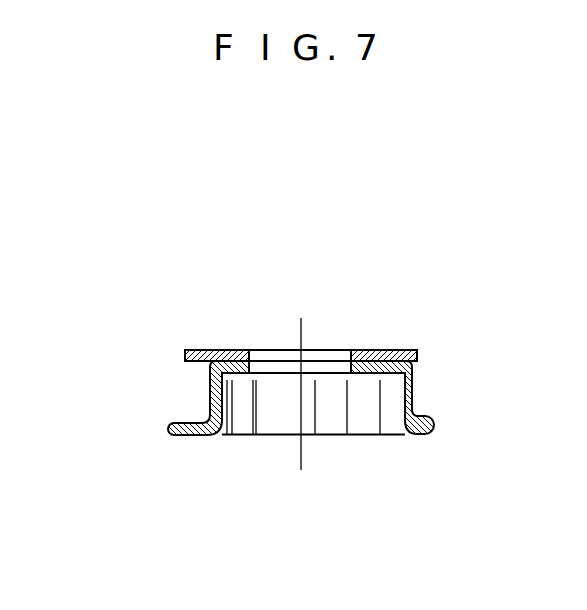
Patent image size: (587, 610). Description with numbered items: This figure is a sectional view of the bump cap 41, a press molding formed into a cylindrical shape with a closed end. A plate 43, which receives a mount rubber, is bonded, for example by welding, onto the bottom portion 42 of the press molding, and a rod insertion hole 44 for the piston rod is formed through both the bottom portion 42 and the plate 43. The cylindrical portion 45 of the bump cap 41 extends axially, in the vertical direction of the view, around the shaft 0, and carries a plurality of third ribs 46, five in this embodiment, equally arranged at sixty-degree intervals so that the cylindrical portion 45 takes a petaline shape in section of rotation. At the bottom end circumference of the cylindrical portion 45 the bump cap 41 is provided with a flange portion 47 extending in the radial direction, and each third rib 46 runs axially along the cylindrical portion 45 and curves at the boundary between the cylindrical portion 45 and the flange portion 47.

The bump cap 41 is at (331, 250).
The shaft 0 is at (301, 332).
The bottom portion 42 is at (373, 382).
The plate 43 is at (207, 349).
The rod insertion hole 44 is at (329, 367).
The cylindrical portion 45 is at (210, 388).
The third ribs 46 is at (413, 390).
The flange portion 47 is at (188, 422).